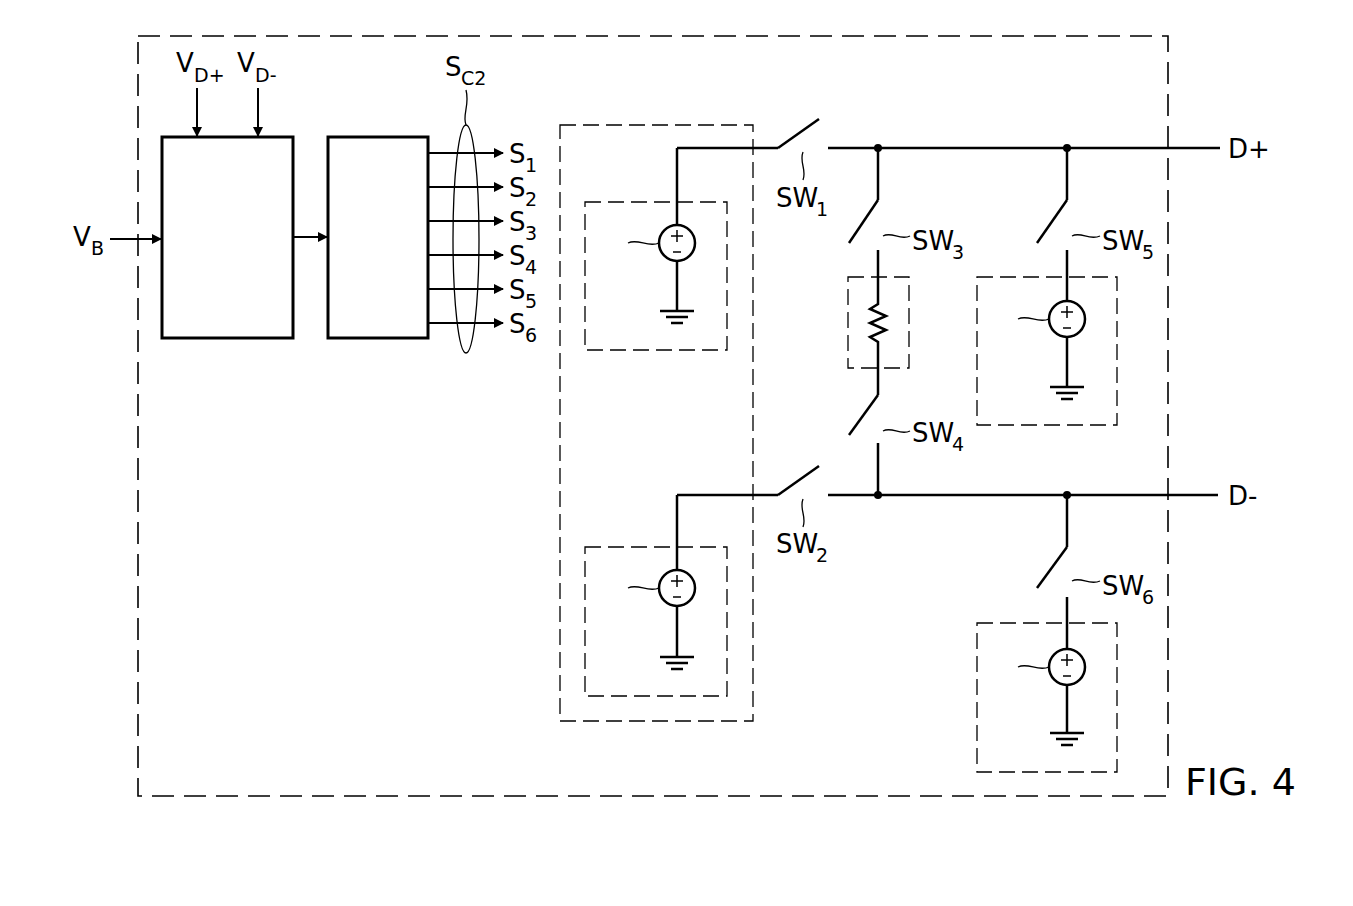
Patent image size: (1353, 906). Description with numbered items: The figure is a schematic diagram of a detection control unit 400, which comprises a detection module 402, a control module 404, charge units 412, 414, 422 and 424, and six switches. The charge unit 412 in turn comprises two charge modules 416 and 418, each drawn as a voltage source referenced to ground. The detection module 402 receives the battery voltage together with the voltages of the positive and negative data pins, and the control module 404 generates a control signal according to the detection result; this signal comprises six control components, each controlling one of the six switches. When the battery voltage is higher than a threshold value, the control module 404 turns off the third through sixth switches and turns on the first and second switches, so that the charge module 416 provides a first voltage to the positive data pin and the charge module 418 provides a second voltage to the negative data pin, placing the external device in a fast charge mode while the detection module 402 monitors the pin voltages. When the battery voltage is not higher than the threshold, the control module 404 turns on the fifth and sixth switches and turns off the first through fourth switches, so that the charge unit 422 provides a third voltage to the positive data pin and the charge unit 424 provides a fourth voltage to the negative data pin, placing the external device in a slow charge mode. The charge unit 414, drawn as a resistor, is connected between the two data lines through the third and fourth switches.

The detection control unit 400 is at (1170, 72).
The detection module 402 is at (213, 340).
The control module 404 is at (378, 340).
The charge unit 412 is at (655, 125).
The charge unit 414 is at (848, 325).
The charge module 416 is at (608, 202).
The charge module 418 is at (609, 547).
The charge unit 422 is at (1045, 427).
The charge unit 424 is at (977, 665).